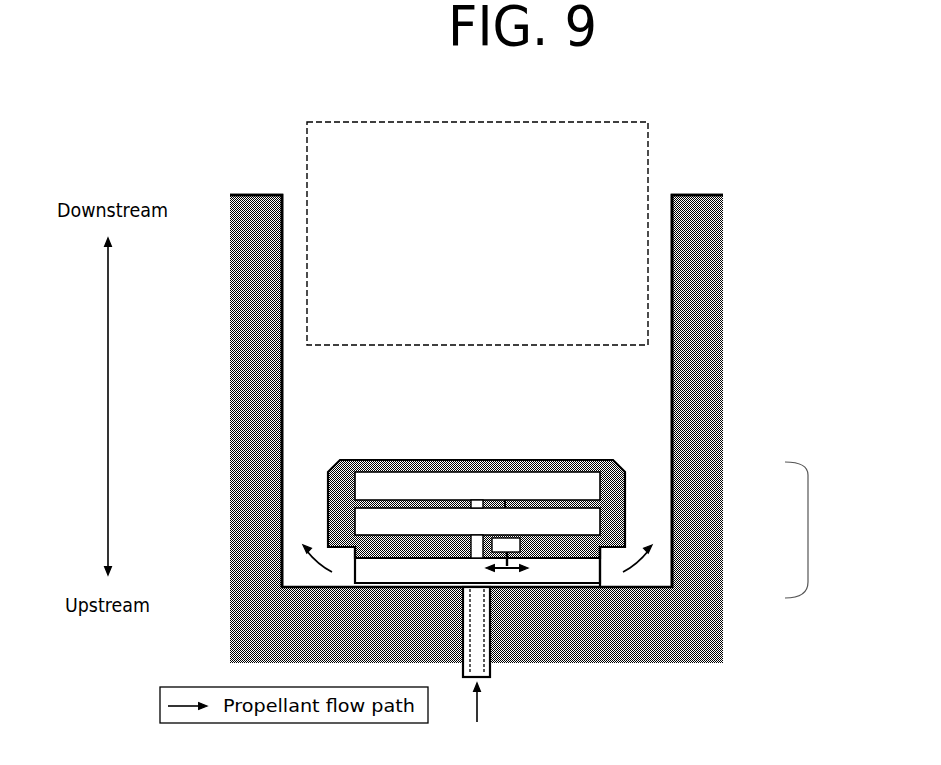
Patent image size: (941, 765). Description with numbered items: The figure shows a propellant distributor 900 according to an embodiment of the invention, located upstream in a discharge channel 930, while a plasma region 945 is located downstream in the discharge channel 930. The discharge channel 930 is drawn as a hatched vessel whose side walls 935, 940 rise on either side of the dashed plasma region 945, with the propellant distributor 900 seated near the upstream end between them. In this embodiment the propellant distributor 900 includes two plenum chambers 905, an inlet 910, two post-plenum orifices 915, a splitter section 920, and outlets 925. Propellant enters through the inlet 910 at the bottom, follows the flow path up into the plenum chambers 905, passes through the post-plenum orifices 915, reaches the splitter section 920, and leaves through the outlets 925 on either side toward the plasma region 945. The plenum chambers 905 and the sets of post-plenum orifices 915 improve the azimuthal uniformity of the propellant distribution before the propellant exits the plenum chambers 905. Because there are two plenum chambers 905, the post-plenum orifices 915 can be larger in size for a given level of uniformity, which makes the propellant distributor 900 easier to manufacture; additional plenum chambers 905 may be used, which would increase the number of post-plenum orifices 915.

The propellant distributor 900 is at (810, 530).
The plenum chambers 905 is at (368, 516).
The inlet 910 is at (500, 685).
The post-plenum orifices 915 is at (512, 491).
The splitter section 920 is at (440, 570).
The outlets 925 is at (605, 587).
The discharge channel 930 is at (691, 162).
The left chamber wall 935 is at (234, 208).
The right chamber wall 940 is at (721, 224).
The plasma region 945 is at (477, 233).